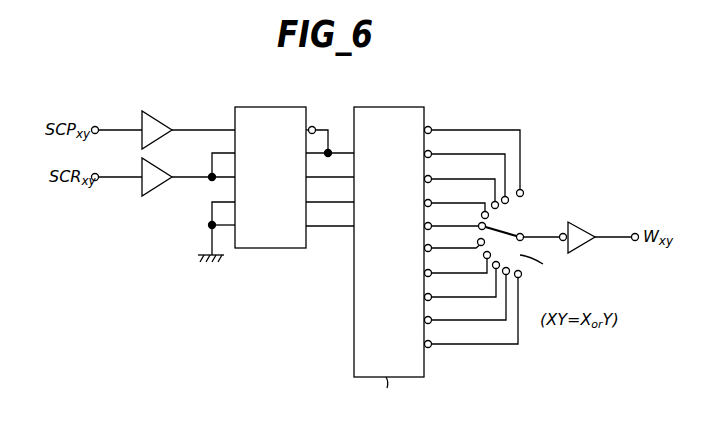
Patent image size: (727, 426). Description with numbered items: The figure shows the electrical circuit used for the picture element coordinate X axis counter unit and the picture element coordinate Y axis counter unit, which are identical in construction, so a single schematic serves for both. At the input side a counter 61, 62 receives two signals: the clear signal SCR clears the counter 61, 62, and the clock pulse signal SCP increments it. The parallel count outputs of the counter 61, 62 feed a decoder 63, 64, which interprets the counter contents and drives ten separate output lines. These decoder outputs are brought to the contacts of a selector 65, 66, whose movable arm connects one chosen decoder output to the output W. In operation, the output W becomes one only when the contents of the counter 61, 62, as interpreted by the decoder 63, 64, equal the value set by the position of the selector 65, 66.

The counter 61 is at (269, 195).
The counter 62 is at (300, 247).
The decoder 63 is at (425, 249).
The decoder 64 is at (424, 364).
The selector 65 is at (545, 237).
The selector 66 is at (521, 212).